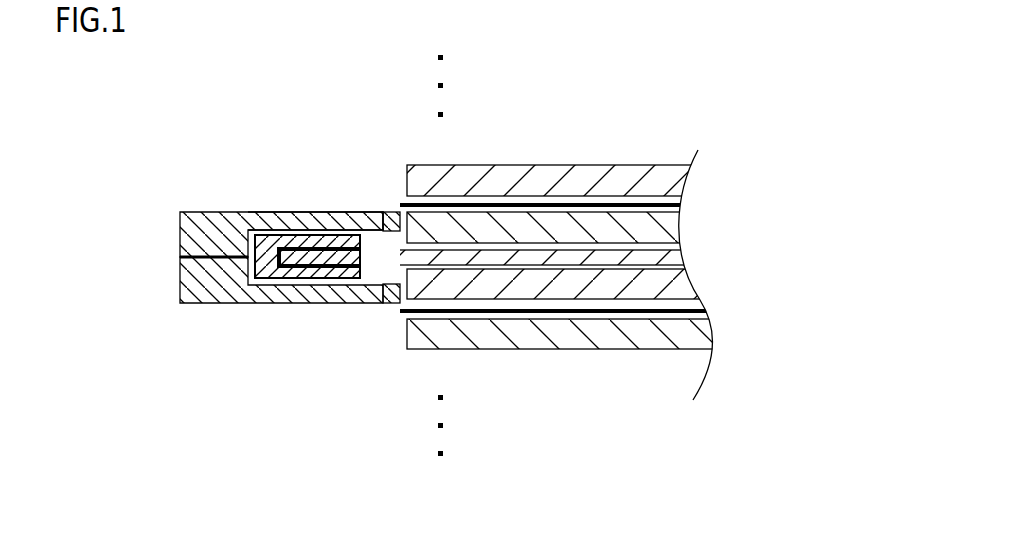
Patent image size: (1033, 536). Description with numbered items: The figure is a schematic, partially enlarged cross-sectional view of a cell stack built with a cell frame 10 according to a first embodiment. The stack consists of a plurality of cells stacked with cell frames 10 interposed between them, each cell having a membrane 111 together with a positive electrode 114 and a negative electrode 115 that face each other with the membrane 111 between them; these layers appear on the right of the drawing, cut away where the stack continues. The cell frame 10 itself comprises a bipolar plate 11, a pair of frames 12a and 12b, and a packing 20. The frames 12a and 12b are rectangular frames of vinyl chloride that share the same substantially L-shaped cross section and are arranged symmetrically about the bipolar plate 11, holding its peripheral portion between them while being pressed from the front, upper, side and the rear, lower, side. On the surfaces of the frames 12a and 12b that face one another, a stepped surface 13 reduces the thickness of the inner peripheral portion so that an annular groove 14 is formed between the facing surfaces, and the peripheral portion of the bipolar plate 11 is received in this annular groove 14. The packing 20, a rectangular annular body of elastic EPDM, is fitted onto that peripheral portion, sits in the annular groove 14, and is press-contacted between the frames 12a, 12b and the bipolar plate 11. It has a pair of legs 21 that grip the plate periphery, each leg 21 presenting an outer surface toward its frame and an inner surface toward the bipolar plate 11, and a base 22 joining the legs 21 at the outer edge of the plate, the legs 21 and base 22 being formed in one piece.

The cell frame 10 is at (173, 200).
The bipolar plate 11 is at (370, 249).
The frame 12a is at (207, 218).
The frame 12b is at (198, 290).
The stepped surface 13 is at (397, 202).
The annular groove 14 is at (307, 220).
The packing 20 is at (307, 327).
The leg 21 is at (331, 266).
The base 22 is at (265, 279).
The membrane 111 is at (681, 205).
The positive electrode 114 is at (681, 174).
The negative electrode 115 is at (673, 229).